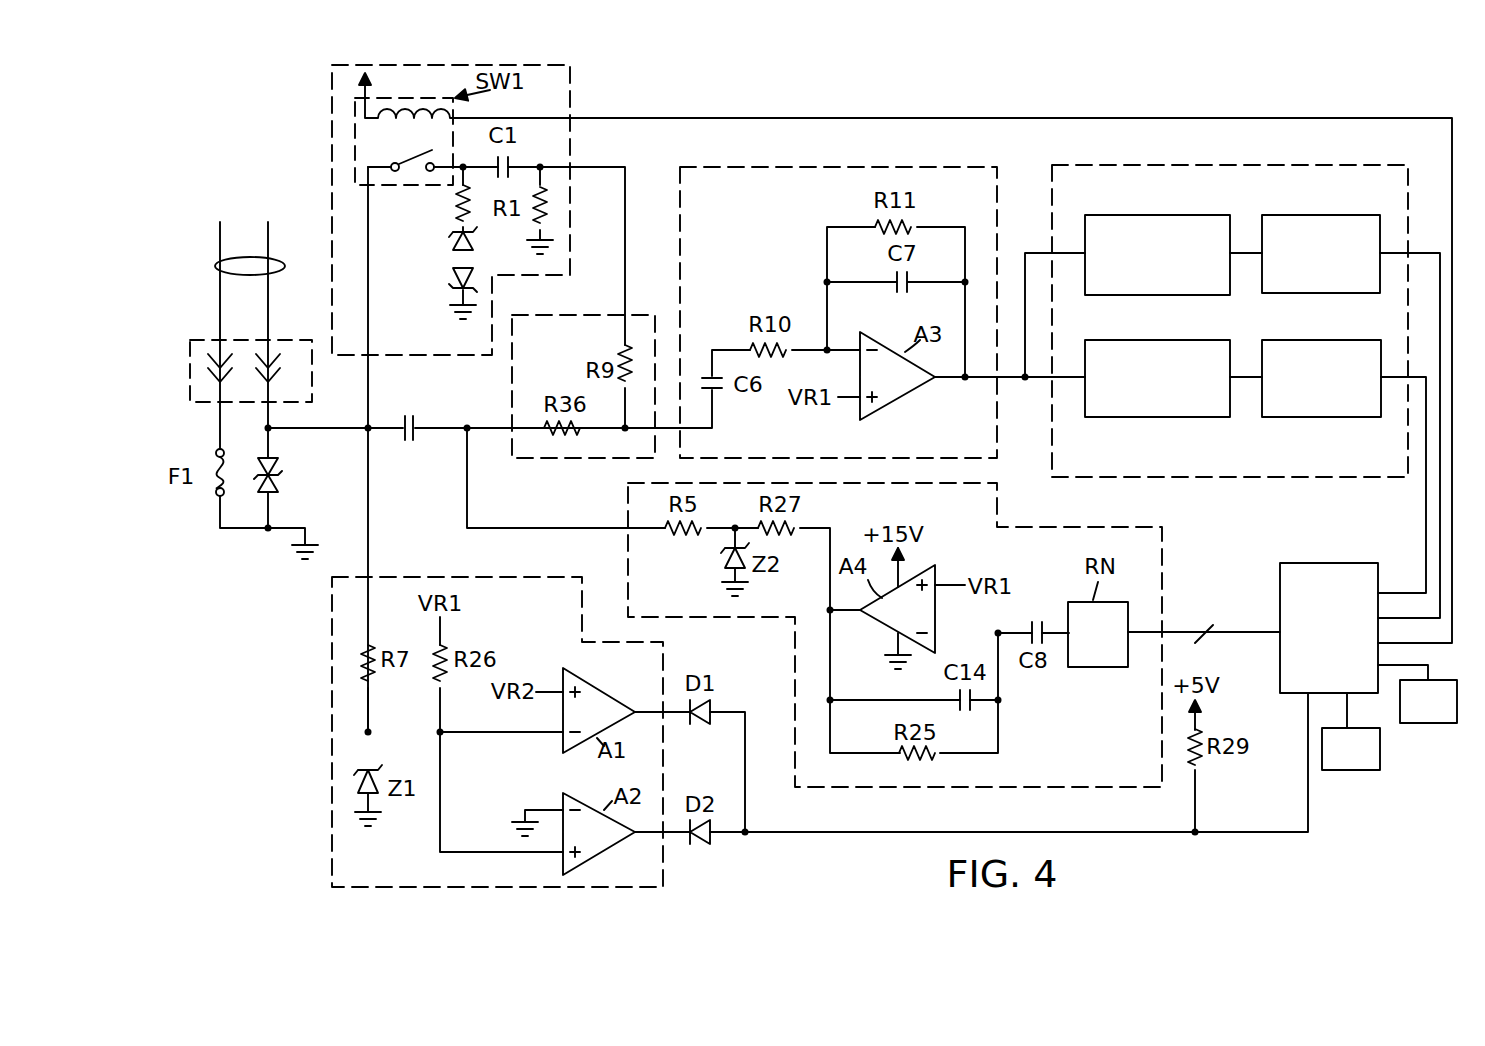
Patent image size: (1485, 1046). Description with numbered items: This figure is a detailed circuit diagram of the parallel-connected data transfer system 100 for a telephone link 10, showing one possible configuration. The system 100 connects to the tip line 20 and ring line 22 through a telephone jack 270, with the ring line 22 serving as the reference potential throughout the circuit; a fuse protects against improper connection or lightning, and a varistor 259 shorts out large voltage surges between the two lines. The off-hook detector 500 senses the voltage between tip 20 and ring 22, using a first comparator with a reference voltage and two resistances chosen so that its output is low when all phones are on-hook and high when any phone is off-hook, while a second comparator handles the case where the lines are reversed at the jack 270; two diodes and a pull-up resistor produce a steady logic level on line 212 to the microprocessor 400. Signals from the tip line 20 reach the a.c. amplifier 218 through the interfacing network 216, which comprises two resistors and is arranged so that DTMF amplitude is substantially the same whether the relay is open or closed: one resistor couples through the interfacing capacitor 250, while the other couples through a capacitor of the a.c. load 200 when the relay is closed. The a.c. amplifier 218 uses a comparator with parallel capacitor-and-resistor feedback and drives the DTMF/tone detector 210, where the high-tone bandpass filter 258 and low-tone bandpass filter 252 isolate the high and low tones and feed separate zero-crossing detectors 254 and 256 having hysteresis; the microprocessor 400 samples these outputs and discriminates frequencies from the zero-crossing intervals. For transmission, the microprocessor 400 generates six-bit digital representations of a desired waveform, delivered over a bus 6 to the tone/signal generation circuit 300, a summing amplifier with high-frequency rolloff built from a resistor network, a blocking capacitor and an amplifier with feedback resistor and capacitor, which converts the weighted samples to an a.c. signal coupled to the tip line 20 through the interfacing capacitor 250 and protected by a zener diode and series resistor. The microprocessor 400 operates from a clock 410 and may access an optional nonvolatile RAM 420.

The data transfer system 100 is at (1298, 100).
The telephone link 10 is at (215, 267).
The tip line 20 is at (271, 296).
The ring line 22 is at (215, 296).
The a.c. load 200 is at (571, 78).
The DTMF/tone detector 210 is at (1168, 165).
The line 212 is at (825, 838).
The interfacing network 216 is at (545, 462).
The a.c. amplifier 218 is at (780, 168).
The interfacing capacitor 250 is at (411, 416).
The low-tone bandpass filter 252 is at (1143, 417).
The zero-crossing detector 254 is at (1312, 215).
The zero-crossing detector 256 is at (1294, 417).
The high-tone bandpass filter 258 is at (1155, 215).
The varistor 259 is at (283, 470).
The telephone jack 270 is at (312, 371).
The tone/signal generation circuit 300 is at (1165, 537).
The microprocessor 400 is at (1352, 649).
The clock 410 is at (1348, 770).
The nonvolatile RAM 420 is at (1427, 723).
The off-hook detector 500 is at (412, 576).
The data bus 6 is at (1204, 620).